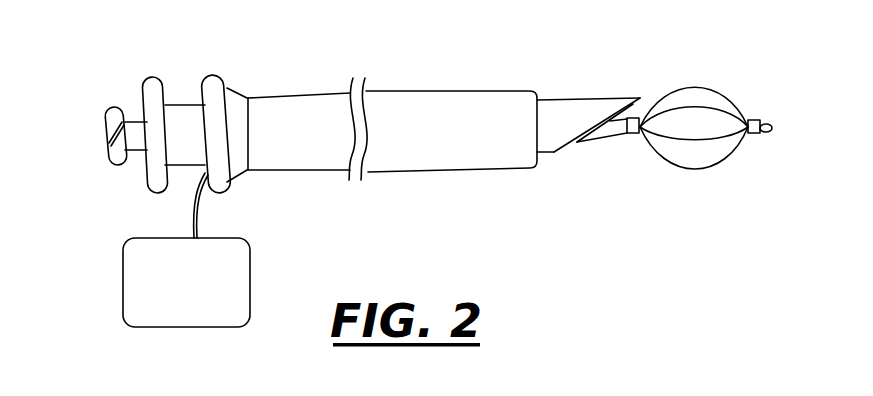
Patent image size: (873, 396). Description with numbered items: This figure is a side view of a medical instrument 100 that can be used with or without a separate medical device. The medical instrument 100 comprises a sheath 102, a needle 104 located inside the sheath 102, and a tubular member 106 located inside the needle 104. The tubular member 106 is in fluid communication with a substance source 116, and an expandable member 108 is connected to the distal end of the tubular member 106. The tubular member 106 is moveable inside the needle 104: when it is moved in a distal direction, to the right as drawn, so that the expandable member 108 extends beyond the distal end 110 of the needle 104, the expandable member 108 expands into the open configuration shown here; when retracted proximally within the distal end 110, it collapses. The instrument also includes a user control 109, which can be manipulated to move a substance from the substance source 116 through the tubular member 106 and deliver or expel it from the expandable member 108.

The medical instrument 100 is at (294, 34).
The sheath 102 is at (408, 112).
The needle 104 is at (565, 110).
The tubular member 106 is at (607, 127).
The expandable member 108 is at (704, 58).
The user control 109 is at (107, 115).
The distal end of the needle 110 is at (562, 146).
The substance source 116 is at (186, 250).